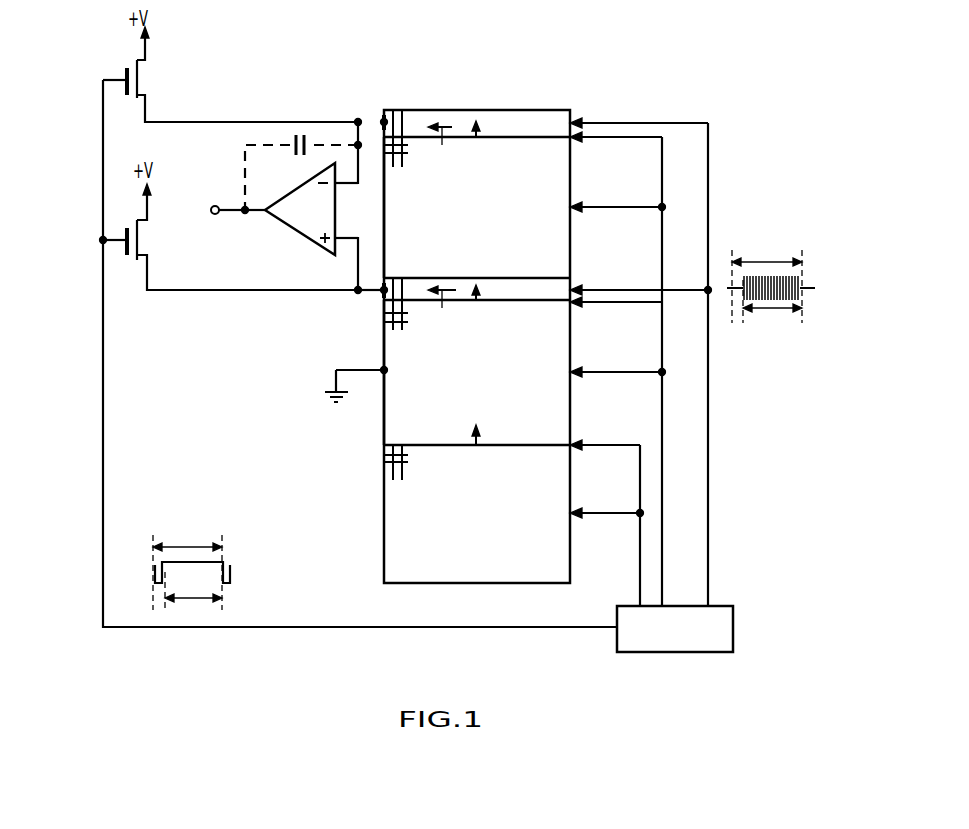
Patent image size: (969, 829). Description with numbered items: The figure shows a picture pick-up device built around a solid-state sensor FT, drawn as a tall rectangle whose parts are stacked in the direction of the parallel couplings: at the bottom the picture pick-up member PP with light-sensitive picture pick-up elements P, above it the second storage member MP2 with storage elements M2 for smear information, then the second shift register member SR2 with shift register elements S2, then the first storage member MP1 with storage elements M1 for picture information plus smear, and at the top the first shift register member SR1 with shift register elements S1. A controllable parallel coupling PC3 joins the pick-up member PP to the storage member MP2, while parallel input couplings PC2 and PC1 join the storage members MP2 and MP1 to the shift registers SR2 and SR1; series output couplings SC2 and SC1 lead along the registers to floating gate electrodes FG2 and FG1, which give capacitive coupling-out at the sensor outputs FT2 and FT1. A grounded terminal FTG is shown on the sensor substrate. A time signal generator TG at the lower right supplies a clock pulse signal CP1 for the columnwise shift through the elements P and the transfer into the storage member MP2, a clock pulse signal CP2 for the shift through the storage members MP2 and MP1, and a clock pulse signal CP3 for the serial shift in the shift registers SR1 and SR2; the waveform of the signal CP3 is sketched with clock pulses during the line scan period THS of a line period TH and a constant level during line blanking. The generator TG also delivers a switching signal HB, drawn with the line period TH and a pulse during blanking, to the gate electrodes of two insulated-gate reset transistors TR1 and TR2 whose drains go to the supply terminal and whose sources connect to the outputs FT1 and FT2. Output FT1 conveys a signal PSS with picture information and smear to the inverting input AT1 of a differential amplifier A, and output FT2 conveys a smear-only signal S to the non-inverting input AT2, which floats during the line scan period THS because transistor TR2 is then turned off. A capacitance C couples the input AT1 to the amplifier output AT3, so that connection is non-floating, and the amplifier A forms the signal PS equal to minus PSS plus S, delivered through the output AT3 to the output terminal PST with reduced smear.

The first switching transistor TR1 is at (138, 81).
The second switching transistor TR2 is at (138, 243).
The signal with picture information and smear PSS is at (356, 120).
The capacitance C is at (296, 145).
The differential amplifier A is at (298, 186).
The inverting input AT1 is at (335, 187).
The non-inverting input AT2 is at (336, 240).
The amplifier output AT3 is at (265, 213).
The output signal PS is at (234, 207).
The output terminal PST is at (215, 215).
The smear signal S is at (357, 292).
The solid-state sensor FT is at (464, 362).
The first sensor output FT1 is at (383, 120).
The second sensor output FT2 is at (384, 291).
The first floating gate electrode FG1 is at (386, 118).
The second floating gate electrode FG2 is at (392, 310).
The first shift register elements S1 is at (394, 118).
The second shift register elements S2 is at (393, 283).
The first storage elements M1 is at (394, 167).
The second storage elements M2 is at (395, 331).
The first shift register member SR1 is at (571, 111).
The second shift register member SR2 is at (571, 280).
The first storage member MP1 is at (572, 178).
The second storage member MP2 is at (572, 343).
The picture pick-up member PP is at (572, 492).
The picture pick-up elements P is at (394, 480).
The first series output coupling SC1 is at (445, 145).
The second series output coupling SC2 is at (445, 310).
The first parallel coupling PC1 is at (476, 137).
The second parallel coupling PC2 is at (476, 300).
The third parallel coupling PC3 is at (476, 445).
The grounded terminal FTG is at (386, 373).
The first clock pulse signal CP1 is at (640, 548).
The second clock pulse signal CP2 is at (665, 527).
The third clock pulse signal CP3 is at (740, 289).
The time signal generator TG is at (733, 630).
The switching signal HB is at (228, 572).
The line period TH is at (178, 545).
The line scan period THS is at (190, 600).